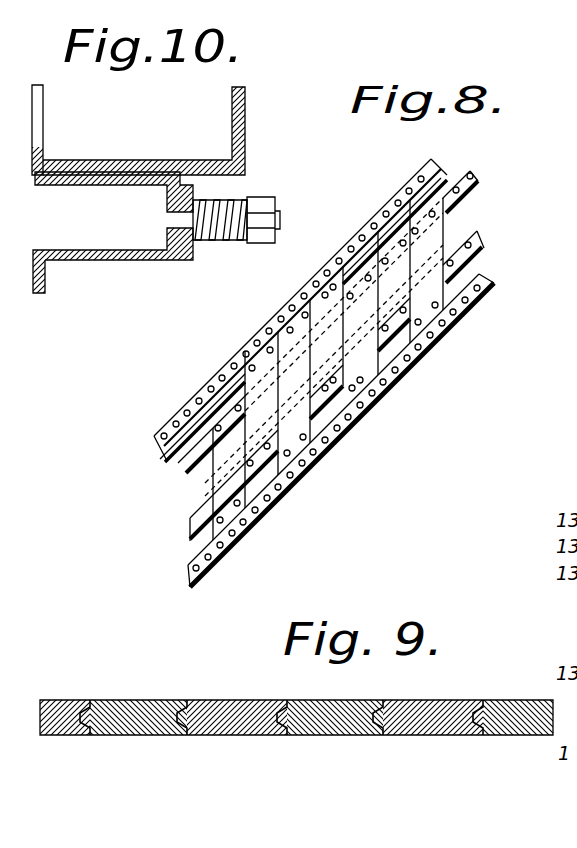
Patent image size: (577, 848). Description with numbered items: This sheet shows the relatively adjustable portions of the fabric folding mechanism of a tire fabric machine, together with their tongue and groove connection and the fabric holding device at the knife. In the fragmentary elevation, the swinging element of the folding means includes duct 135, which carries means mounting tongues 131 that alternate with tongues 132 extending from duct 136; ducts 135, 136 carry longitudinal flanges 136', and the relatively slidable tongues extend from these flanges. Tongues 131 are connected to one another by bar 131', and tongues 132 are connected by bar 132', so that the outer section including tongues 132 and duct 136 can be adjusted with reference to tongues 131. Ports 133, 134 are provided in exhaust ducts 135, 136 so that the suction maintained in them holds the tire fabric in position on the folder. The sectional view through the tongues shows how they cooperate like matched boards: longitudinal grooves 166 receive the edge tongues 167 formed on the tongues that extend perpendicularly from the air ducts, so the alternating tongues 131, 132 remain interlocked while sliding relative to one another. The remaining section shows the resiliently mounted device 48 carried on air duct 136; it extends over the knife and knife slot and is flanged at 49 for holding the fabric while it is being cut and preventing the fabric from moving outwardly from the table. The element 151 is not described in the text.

In FIG. 10, the ports 134 is at (35, 120).
In FIG. 8, the ports 134 is at (463, 302).
In FIG. 10, the air duct 136 is at (168, 131).
In FIG. 8, the air duct 136 is at (341, 430).
In FIG. 10, the resiliently mounted device 48 is at (167, 260).
In FIG. 10, the flange 49 is at (45, 280).
In FIG. 8, the ports 133 is at (418, 176).
In FIG. 8, the duct 135 is at (349, 242).
In FIG. 8, the longitudinal flanges 136' is at (278, 369).
In FIG. 8, the bar 132' is at (351, 306).
In FIG. 8, the tongues 131 is at (344, 304).
In FIG. 9, the tongues 131 is at (261, 738).
In FIG. 8, the bar 131' is at (359, 371).
In FIG. 8, the board 151 is at (328, 369).
In FIG. 8, the tongues 132 is at (344, 348).
In FIG. 9, the tongues 132 is at (321, 738).
In FIG. 9, the longitudinal grooves 166 is at (190, 700).
In FIG. 9, the edge tongues 167 is at (188, 735).